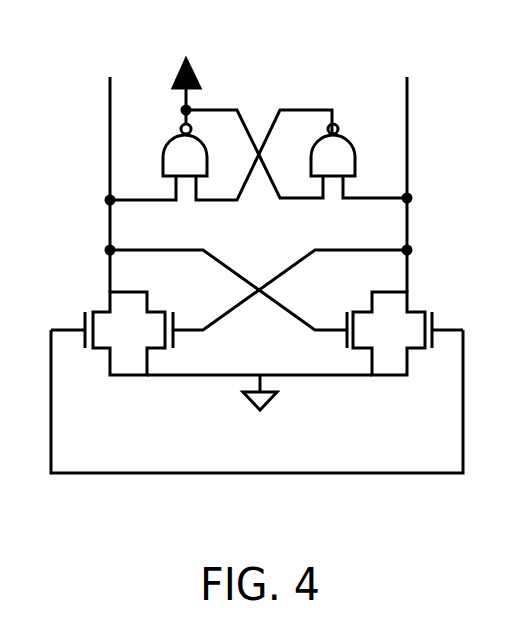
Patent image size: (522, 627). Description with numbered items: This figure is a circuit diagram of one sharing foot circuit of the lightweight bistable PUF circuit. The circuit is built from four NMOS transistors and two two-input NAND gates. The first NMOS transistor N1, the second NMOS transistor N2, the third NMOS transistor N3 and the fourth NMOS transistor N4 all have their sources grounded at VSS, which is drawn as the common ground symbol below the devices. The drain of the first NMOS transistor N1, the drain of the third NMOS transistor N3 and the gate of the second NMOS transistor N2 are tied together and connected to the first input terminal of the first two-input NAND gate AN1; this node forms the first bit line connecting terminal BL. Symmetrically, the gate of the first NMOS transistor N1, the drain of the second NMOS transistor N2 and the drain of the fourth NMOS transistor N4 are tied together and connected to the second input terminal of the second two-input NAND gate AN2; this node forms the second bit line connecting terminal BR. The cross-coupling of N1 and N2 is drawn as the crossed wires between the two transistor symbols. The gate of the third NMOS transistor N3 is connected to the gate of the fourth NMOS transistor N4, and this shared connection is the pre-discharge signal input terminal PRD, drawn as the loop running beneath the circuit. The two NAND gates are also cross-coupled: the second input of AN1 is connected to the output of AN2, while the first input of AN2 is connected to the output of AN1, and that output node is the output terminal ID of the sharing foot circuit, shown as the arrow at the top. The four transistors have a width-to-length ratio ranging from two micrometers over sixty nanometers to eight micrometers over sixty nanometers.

The first bit line connecting terminal BL is at (114, 161).
The second bit line connecting terminal BR is at (406, 161).
The output terminal of the sharing foot circuit ID is at (204, 77).
The first two-input NAND gate AN1 is at (221, 155).
The second two-input NAND gate AN2 is at (296, 154).
The first NMOS transistor N1 is at (250, 312).
The second NMOS transistor N2 is at (267, 312).
The third NMOS transistor N3 is at (73, 307).
The fourth NMOS transistor N4 is at (444, 307).
The ground VSS is at (260, 412).
The pre-discharge signal input terminal PRD is at (257, 424).